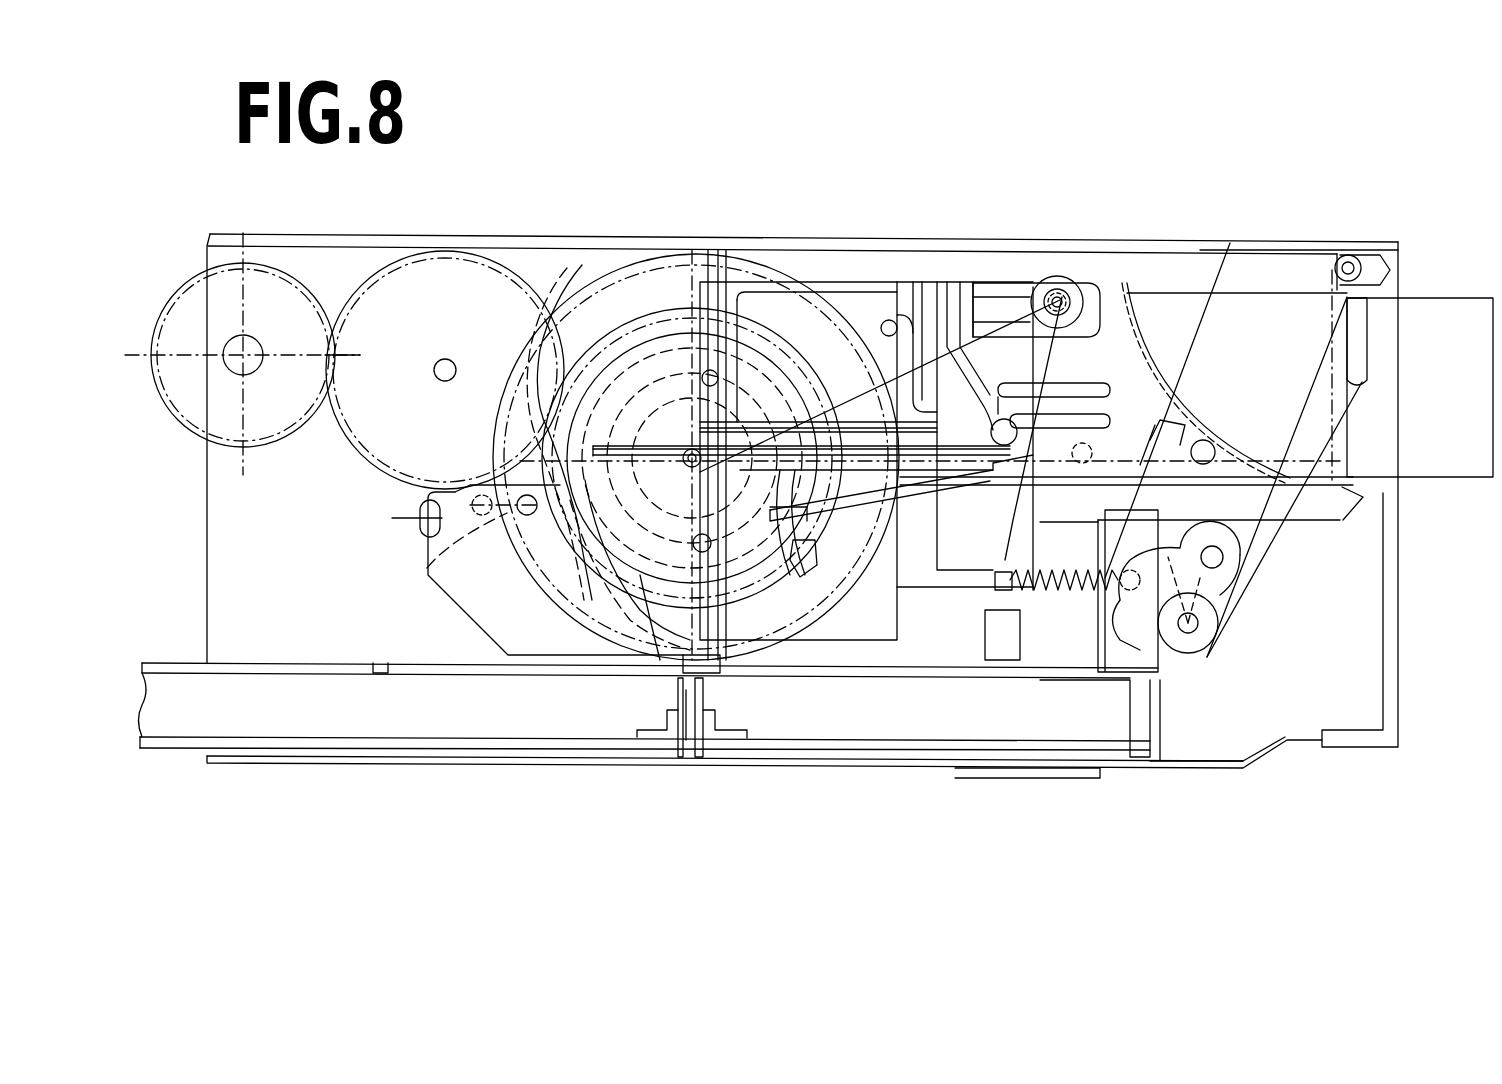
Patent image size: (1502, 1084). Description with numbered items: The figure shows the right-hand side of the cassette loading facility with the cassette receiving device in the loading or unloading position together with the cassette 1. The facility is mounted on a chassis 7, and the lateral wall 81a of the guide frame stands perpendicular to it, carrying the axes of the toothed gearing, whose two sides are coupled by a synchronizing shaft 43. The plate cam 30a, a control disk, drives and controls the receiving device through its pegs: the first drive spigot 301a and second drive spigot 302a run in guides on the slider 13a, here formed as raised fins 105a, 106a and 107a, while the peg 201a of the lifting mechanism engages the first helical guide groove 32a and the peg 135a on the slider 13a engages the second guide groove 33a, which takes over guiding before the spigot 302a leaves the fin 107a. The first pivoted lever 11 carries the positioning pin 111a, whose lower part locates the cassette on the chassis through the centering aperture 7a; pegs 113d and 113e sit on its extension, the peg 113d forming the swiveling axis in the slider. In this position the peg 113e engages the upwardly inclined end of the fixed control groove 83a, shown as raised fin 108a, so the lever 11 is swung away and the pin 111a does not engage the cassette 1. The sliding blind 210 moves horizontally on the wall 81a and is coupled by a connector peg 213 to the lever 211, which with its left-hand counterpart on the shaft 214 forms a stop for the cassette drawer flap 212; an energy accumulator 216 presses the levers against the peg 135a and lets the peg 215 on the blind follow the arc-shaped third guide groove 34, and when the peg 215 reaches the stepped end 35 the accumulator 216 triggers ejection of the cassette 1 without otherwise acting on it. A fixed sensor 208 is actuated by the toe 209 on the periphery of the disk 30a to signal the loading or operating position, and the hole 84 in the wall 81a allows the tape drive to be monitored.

The cassette 1 is at (1432, 298).
The chassis 7 is at (172, 678).
The centering aperture 7a is at (378, 674).
The first pivoted lever 11 is at (872, 502).
The slider 13a is at (1096, 270).
The plate cam 30a is at (618, 262).
The first helical guide groove 32a is at (668, 577).
The second guide groove 33a is at (623, 370).
The third guide groove 34 is at (595, 605).
The stepped end 35 is at (436, 560).
The synchronizing shaft 43 is at (238, 368).
The lateral wall 81a is at (228, 553).
The control groove 83a is at (1013, 300).
The hole 84 is at (420, 513).
The raised fin 105a is at (1090, 385).
The raised fin 106a is at (955, 302).
The raised fin 107a is at (915, 305).
The raised fin 108a is at (1067, 330).
The positioning pin 111a is at (788, 552).
The peg 113d is at (1006, 440).
The peg 113e is at (1064, 300).
The peg 135a is at (1212, 450).
The peg 201a is at (702, 372).
The sensor 208 is at (655, 725).
The toe 209 is at (717, 674).
The sliding blind 210 is at (475, 645).
The lever 211 is at (1270, 537).
The cassette drawer flap 212 is at (1232, 258).
The connector peg 213 is at (1217, 558).
The shaft 214 is at (1195, 630).
The peg 215 is at (527, 512).
The energy accumulator 216 is at (1055, 600).
The first drive spigot 301a is at (712, 548).
The second drive spigot 302a is at (867, 440).